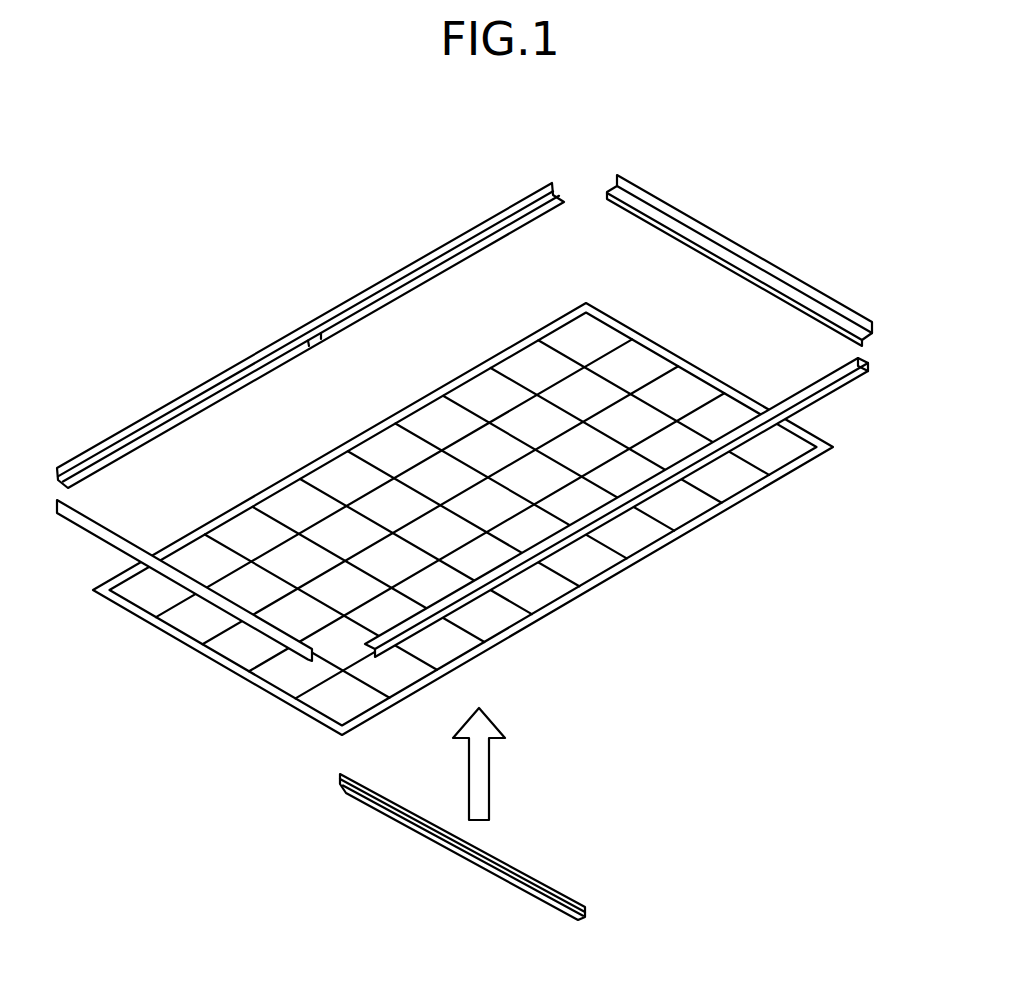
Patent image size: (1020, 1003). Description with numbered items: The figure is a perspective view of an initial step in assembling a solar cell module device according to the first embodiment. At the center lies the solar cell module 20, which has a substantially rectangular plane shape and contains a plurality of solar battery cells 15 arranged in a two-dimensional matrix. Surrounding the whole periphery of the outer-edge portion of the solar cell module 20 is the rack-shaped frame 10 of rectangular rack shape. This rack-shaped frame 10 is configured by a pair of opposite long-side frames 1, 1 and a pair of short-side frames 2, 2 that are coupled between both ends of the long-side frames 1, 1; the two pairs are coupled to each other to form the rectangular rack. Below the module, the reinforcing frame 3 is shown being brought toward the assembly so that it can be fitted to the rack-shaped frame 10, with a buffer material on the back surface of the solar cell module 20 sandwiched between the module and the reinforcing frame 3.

The long-side frame 1 is at (745, 442).
The short-side frame 2 is at (203, 600).
The reinforcing frame 3 is at (468, 860).
The rack-shaped frame 10 is at (457, 236).
The solar battery cell 15 is at (496, 626).
The solar cell module 20 is at (532, 586).